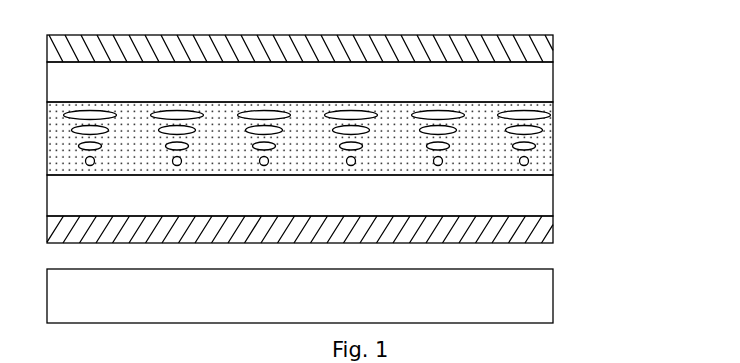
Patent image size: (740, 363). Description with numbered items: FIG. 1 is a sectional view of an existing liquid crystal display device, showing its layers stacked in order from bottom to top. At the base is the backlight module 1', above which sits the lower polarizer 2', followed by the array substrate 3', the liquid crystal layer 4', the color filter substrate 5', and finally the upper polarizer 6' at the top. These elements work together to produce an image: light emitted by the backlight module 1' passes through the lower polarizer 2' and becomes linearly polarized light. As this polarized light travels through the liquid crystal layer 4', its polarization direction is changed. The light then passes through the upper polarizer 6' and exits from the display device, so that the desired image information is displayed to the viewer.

The backlight module 1' is at (348, 293).
The lower polarizer 2' is at (348, 223).
The array substrate 3' is at (348, 191).
The liquid crystal layer 4' is at (348, 137).
The color filter substrate 5' is at (348, 76).
The upper polarizer 6' is at (348, 40).